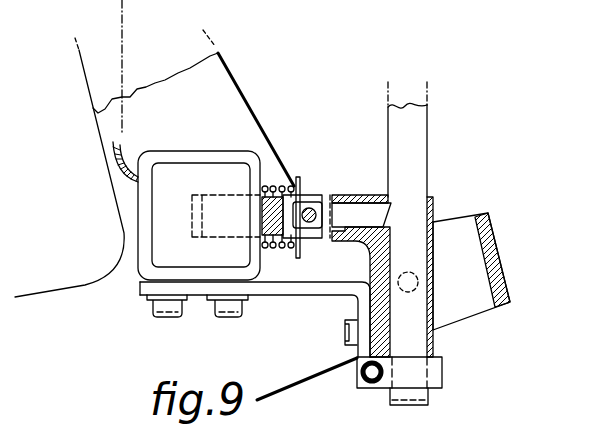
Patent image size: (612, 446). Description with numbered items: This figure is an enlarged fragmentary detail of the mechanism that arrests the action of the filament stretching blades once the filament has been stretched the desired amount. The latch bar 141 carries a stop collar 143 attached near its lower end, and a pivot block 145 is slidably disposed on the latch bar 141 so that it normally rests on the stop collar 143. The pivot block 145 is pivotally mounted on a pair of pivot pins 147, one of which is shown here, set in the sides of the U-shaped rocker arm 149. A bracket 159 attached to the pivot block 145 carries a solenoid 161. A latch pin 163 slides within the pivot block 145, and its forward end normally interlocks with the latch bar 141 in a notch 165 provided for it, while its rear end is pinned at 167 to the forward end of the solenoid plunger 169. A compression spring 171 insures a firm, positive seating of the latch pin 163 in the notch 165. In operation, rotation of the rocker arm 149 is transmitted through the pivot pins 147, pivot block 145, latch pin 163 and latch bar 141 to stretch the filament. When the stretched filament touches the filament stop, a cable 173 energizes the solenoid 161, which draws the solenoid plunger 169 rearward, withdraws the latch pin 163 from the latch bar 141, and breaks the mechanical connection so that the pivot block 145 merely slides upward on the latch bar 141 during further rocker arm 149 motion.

The latch bar 141 is at (422, 134).
The stop collar 143 is at (443, 373).
The pivot block 145 is at (435, 295).
The pivot pin 147 is at (418, 274).
The rocker arm 149 is at (238, 101).
The bracket 159 is at (280, 295).
The solenoid 161 is at (214, 170).
The latch pin 163 is at (365, 205).
The notch 165 is at (393, 217).
The pin connection 167 is at (313, 208).
The solenoid plunger 169 is at (309, 195).
The compression spring 171 is at (275, 185).
The cable 173 is at (115, 172).